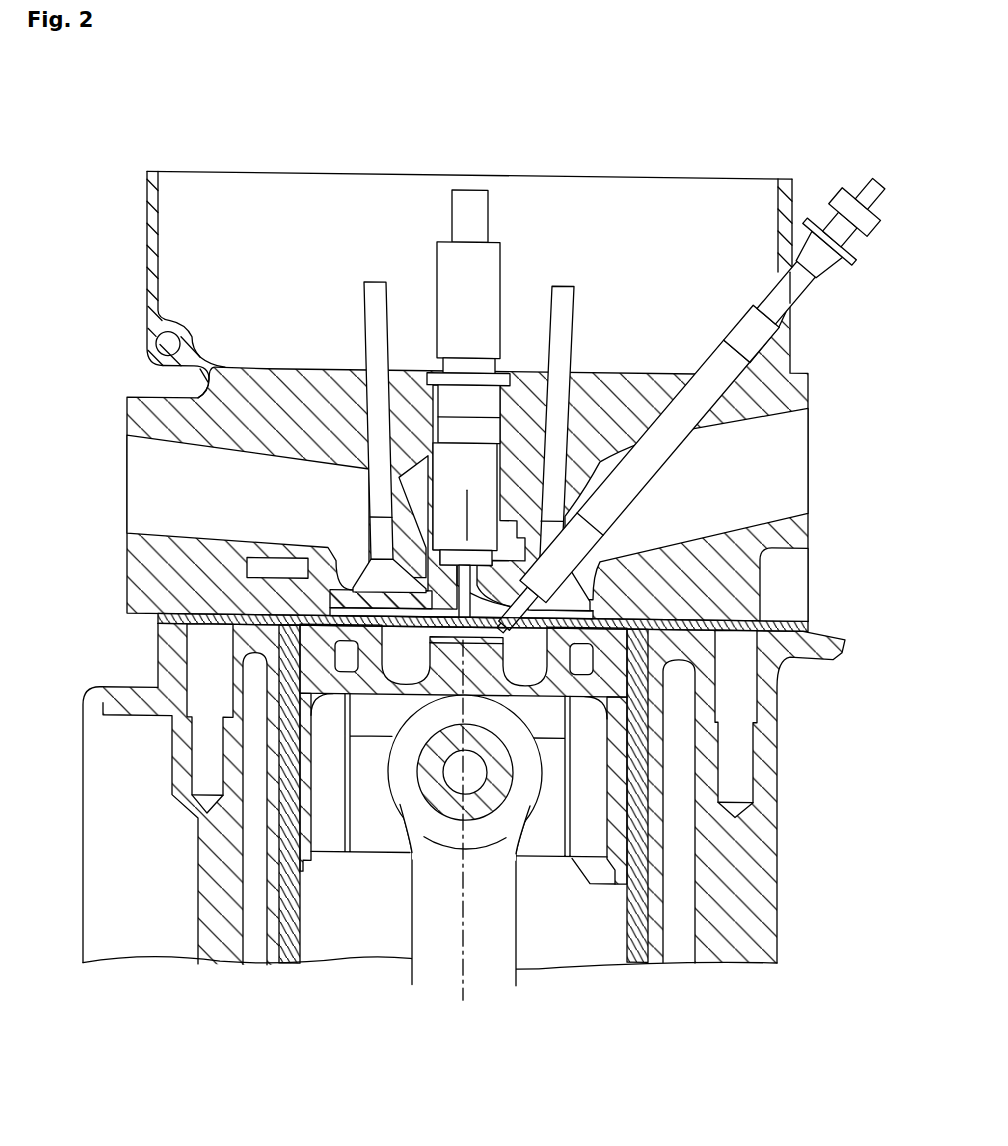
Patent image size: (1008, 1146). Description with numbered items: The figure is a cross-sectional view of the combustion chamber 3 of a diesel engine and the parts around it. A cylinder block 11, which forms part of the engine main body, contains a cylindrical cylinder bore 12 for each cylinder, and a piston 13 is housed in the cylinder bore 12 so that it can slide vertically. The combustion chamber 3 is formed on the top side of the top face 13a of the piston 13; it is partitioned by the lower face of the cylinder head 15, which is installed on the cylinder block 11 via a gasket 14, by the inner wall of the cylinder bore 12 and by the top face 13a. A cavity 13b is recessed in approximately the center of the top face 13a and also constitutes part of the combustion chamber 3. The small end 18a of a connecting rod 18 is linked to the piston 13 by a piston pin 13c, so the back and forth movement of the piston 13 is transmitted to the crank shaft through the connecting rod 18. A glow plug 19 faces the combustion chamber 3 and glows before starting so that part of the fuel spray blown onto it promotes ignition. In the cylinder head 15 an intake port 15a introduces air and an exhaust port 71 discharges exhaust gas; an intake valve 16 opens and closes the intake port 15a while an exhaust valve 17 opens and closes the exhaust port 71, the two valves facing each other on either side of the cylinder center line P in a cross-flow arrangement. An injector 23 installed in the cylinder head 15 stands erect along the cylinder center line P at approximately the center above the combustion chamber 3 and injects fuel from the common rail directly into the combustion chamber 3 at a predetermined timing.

The combustion chamber 3 is at (590, 573).
The cylinder block 11 is at (787, 843).
The cylinder bore 12 is at (308, 937).
The piston 13 is at (608, 895).
The top face of the piston 13a is at (310, 612).
The cavity 13b is at (587, 552).
The piston pin 13c is at (497, 794).
The gasket 14 is at (712, 612).
The cylinder head 15 is at (136, 251).
The intake port 15a is at (793, 462).
The intake valve 16 is at (573, 476).
The exhaust valve 17 is at (380, 492).
The connecting rod 18 is at (406, 939).
The small end of the connecting rod 18a is at (360, 769).
The glow plug 19 is at (745, 322).
The injector 23 is at (499, 218).
The exhaust port 71 is at (155, 471).
The cylinder center line P is at (463, 912).